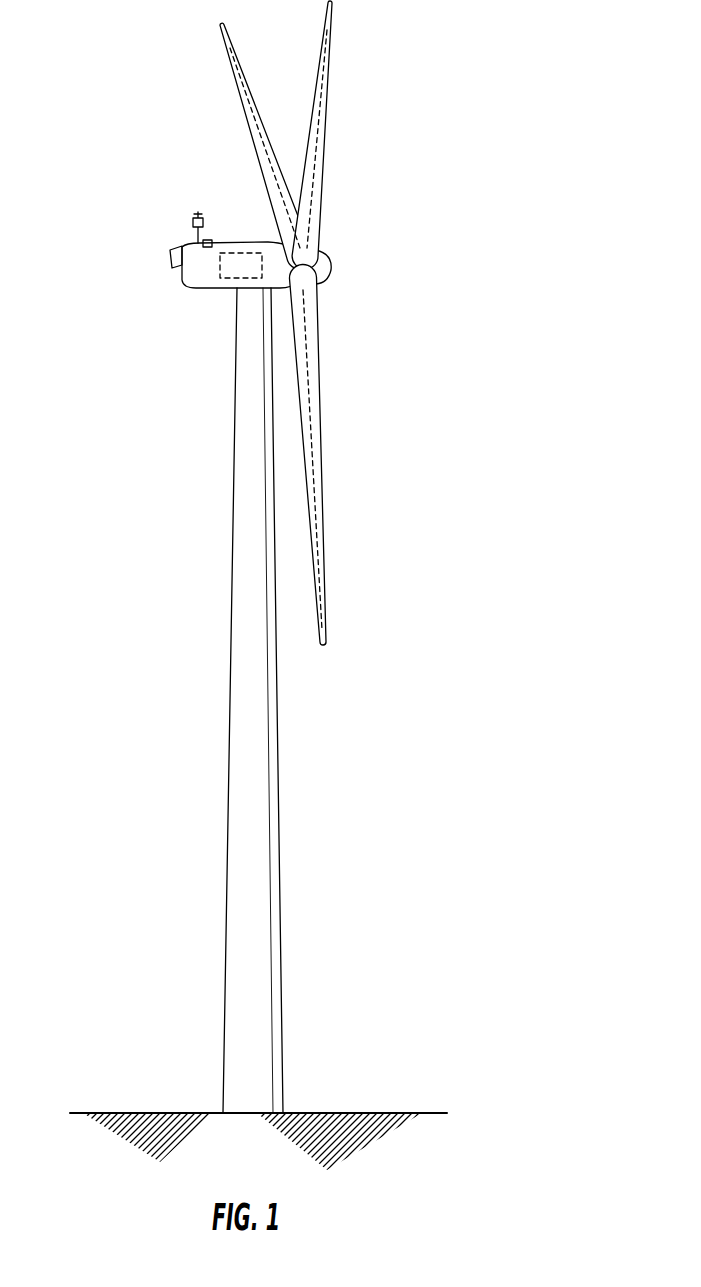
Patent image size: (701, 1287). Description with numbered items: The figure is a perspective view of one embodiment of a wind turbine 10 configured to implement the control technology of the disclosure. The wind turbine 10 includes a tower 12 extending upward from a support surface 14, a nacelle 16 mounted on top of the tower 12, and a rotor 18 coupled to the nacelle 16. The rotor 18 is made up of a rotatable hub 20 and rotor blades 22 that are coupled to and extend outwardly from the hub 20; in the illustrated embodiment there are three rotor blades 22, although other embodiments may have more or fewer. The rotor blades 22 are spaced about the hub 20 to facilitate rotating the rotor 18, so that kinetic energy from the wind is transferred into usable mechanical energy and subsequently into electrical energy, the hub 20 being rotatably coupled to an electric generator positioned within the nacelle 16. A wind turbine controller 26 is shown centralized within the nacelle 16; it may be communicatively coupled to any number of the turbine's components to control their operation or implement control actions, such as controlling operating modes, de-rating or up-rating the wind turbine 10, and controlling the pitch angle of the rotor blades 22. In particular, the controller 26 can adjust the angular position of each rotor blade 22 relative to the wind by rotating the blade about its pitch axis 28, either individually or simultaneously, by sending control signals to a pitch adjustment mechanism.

The wind turbine 10 is at (424, 82).
The tower 12 is at (238, 812).
The support surface 14 is at (148, 1112).
The nacelle 16 is at (210, 290).
The rotor 18 is at (335, 238).
The rotatable hub 20 is at (328, 267).
The rotor blade 22 is at (315, 117).
The wind turbine controller 26 is at (242, 252).
The pitch axis 28 is at (253, 128).